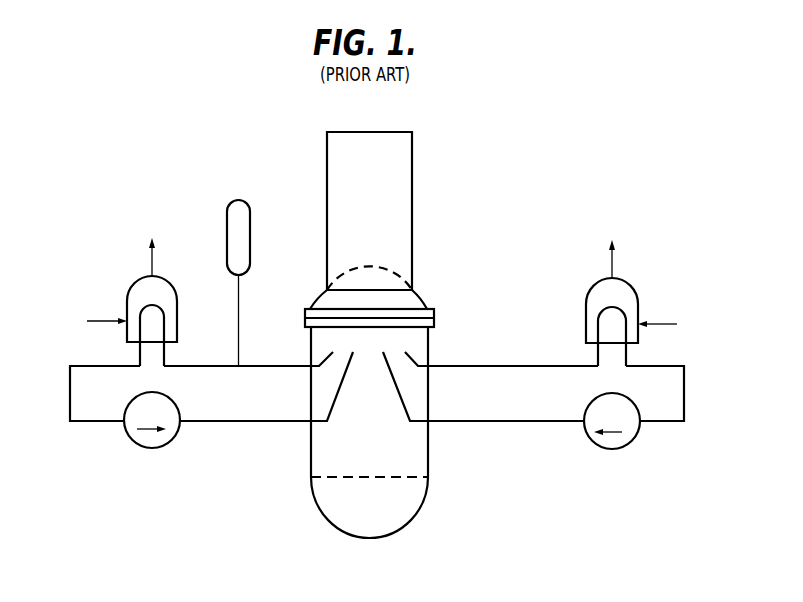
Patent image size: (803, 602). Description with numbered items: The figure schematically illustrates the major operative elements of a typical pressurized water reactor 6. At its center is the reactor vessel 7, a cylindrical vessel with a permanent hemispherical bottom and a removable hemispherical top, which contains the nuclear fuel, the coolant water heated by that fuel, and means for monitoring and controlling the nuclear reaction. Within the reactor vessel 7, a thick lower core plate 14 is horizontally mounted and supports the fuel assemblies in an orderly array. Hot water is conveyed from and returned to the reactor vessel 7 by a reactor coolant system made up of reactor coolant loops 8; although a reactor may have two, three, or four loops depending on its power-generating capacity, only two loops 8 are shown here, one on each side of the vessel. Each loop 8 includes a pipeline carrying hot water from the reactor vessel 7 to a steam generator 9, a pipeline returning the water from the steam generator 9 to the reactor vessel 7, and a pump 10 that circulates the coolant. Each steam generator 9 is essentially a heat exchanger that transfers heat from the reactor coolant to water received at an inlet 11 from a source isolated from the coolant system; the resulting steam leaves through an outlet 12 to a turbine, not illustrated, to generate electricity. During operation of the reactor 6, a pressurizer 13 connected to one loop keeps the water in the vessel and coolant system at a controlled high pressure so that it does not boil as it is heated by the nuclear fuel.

The pressurized water reactor 6 is at (226, 487).
The reactor vessel 7 is at (428, 457).
The reactor coolant loop 8 is at (54, 386).
The steam generator 9 is at (177, 308).
The pump 10 is at (138, 446).
The inlet 11 is at (102, 316).
The outlet 12 is at (152, 268).
The pressurizer 13 is at (250, 245).
The lower core plate 14 is at (343, 477).